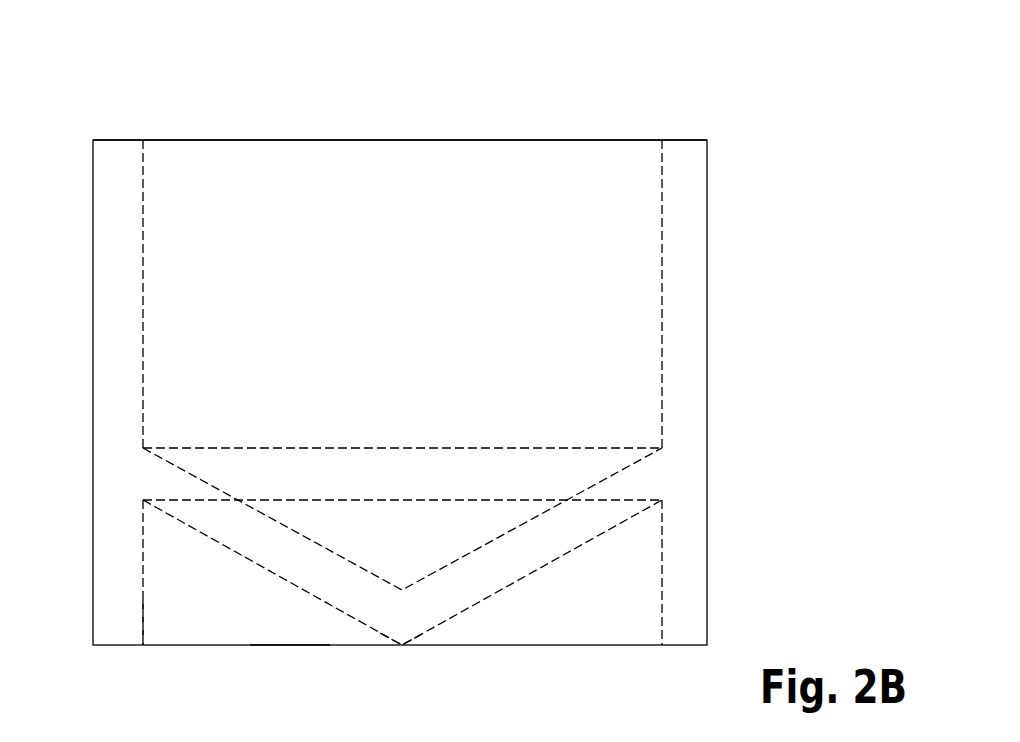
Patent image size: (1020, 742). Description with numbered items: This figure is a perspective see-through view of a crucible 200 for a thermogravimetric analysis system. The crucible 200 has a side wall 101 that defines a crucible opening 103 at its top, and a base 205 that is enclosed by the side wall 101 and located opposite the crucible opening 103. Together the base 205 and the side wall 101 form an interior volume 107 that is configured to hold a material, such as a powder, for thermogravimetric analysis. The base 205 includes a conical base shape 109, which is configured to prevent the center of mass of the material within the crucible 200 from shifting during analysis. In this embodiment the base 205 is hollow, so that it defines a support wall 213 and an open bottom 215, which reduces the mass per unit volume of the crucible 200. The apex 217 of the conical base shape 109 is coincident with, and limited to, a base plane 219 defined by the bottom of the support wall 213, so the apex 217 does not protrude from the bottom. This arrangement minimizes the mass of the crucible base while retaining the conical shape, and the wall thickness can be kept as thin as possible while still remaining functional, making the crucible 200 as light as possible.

The crucible 200 is at (76, 113).
The side wall 101 is at (108, 260).
The crucible opening 103 is at (502, 138).
The interior volume 107 is at (395, 246).
The base shape 109 is at (529, 520).
The support wall 213 is at (108, 575).
The base 205 is at (503, 575).
The open bottom 215 is at (155, 647).
The apex 217 is at (403, 647).
The base plane 219 is at (289, 651).